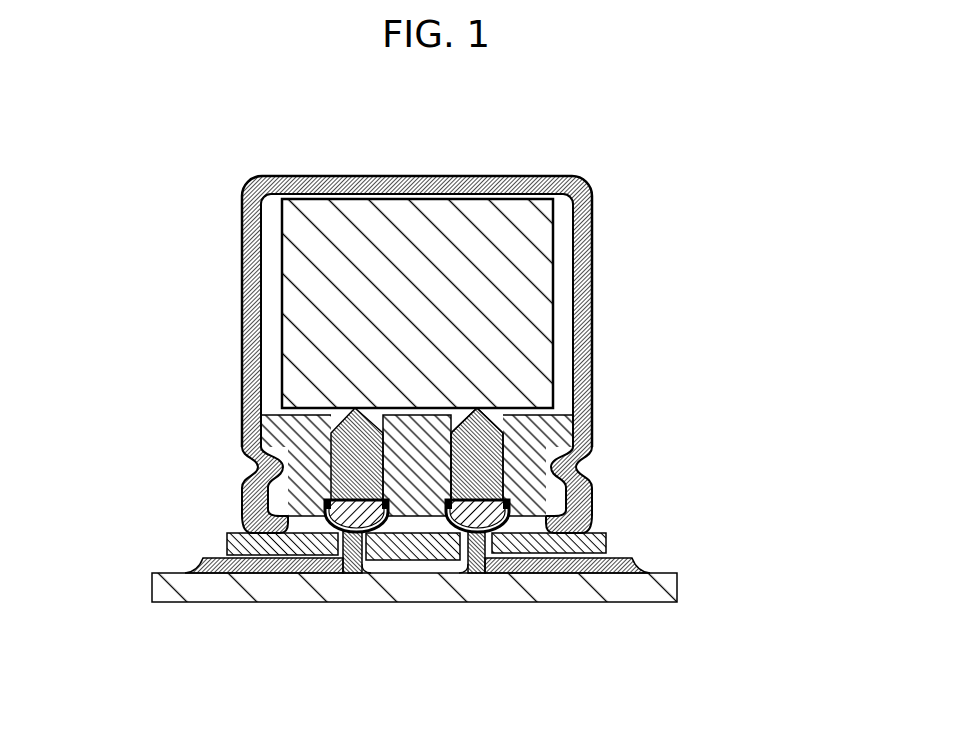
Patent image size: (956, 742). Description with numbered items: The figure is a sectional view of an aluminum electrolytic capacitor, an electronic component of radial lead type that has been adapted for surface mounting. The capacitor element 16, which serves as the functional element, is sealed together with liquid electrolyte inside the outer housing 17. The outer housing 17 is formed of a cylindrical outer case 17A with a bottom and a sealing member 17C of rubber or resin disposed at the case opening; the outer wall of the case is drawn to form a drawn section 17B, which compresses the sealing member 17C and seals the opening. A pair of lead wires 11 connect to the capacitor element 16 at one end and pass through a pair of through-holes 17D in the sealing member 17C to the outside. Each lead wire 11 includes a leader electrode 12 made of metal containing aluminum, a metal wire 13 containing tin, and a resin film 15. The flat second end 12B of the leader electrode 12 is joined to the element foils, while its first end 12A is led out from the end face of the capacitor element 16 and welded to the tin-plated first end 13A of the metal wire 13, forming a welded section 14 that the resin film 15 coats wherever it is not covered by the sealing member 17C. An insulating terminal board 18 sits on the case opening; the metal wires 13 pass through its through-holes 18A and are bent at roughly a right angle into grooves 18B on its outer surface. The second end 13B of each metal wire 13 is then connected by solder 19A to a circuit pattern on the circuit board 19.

The lead wire 11 is at (807, 305).
The leader electrode 12 is at (753, 277).
The first end of leader electrode 12A is at (487, 497).
The second end of leader electrode 12B is at (487, 430).
The metal wire 13 is at (753, 465).
The first end of metal wire 13A is at (508, 530).
The second end of metal wire 13B is at (632, 560).
The welded section 14 is at (487, 506).
The resin film 15 is at (495, 516).
The capacitor element 16 is at (513, 248).
The outer housing 17 is at (128, 172).
The outer case 17A is at (253, 223).
The drawn section 17B is at (253, 470).
The sealing member 17C is at (302, 448).
The through-hole of sealing member 17D is at (338, 413).
The insulating terminal board 18 is at (417, 558).
The through-hole of terminal board 18A is at (467, 550).
The groove 18B is at (237, 555).
The circuit board 19 is at (255, 588).
The solder 19A is at (200, 570).